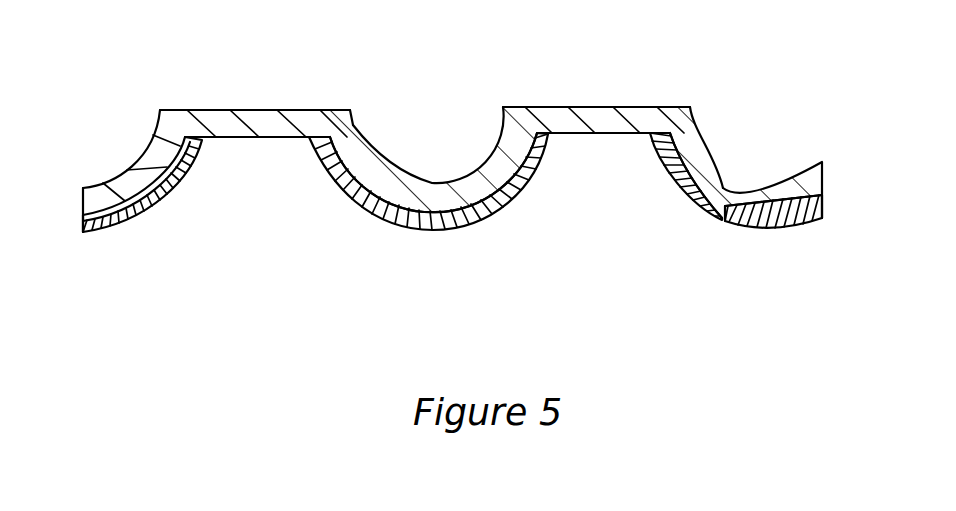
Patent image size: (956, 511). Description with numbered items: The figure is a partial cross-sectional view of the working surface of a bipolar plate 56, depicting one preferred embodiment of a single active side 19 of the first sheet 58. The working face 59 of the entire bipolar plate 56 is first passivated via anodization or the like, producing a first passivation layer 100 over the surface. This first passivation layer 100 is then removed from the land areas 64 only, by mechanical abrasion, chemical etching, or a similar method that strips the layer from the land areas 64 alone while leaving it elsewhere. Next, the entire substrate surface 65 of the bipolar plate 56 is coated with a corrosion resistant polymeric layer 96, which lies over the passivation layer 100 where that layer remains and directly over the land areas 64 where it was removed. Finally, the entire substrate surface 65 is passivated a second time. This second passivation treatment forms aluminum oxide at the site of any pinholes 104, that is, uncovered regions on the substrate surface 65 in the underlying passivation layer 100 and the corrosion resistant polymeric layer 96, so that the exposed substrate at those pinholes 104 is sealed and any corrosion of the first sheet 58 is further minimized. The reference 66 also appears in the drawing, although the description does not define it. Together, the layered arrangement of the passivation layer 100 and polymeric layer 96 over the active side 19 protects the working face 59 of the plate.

The active side 19 is at (82, 180).
The bipolar plate 56 is at (529, 249).
The first sheet 58 is at (123, 234).
The working face 59 is at (145, 192).
The land areas 64 is at (580, 130).
The substrate surface 65 is at (267, 138).
The reinforcing layer in valley 66 is at (393, 195).
The corrosion resistant polymeric layer 96 is at (688, 108).
The first passivation layer 100 is at (440, 230).
The pinholes 104 is at (722, 220).